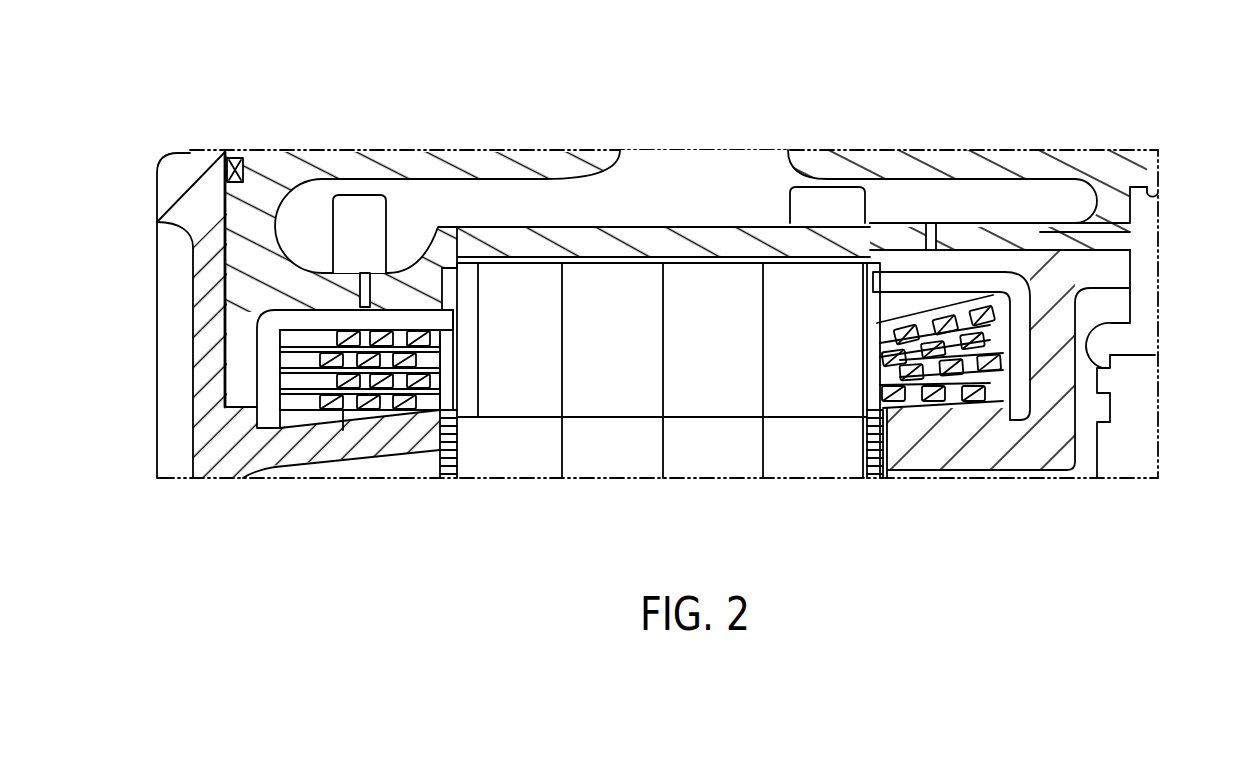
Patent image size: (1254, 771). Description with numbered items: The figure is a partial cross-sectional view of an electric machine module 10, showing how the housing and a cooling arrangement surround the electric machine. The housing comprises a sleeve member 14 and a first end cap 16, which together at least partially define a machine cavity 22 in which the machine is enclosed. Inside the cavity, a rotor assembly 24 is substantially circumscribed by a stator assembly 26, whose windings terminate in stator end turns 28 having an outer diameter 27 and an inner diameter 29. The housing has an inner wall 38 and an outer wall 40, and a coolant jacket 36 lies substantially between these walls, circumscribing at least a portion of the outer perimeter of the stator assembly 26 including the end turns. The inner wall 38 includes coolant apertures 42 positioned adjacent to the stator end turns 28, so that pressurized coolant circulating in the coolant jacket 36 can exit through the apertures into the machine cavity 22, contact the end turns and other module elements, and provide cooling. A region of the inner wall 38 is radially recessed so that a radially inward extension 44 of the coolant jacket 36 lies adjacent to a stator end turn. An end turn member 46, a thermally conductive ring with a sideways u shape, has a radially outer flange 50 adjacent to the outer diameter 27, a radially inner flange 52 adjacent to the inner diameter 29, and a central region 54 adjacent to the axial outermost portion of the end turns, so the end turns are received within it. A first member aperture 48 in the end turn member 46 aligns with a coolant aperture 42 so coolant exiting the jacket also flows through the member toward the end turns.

The electric machine module 10 is at (984, 64).
The sleeve member 14 is at (318, 150).
The first end cap 16 is at (172, 167).
The machine cavity 22 is at (392, 462).
The rotor assembly 24 is at (522, 450).
The stator assembly 26 is at (712, 390).
The outer diameter of the stator end turns 27 is at (910, 296).
The stator end turns 28 is at (343, 395).
The inner diameter of the stator end turns 29 is at (950, 425).
The coolant jacket 36 is at (480, 195).
The inner wall 38 is at (260, 330).
The outer wall 40 is at (950, 165).
The coolant apertures 42 is at (368, 270).
The radially inward extension 44 is at (302, 212).
The end turn member 46 is at (1113, 272).
The first member aperture 48 is at (1000, 258).
The radially outer flange 50 is at (1131, 227).
The radially inner flange 52 is at (978, 455).
The central region 54 is at (1063, 388).